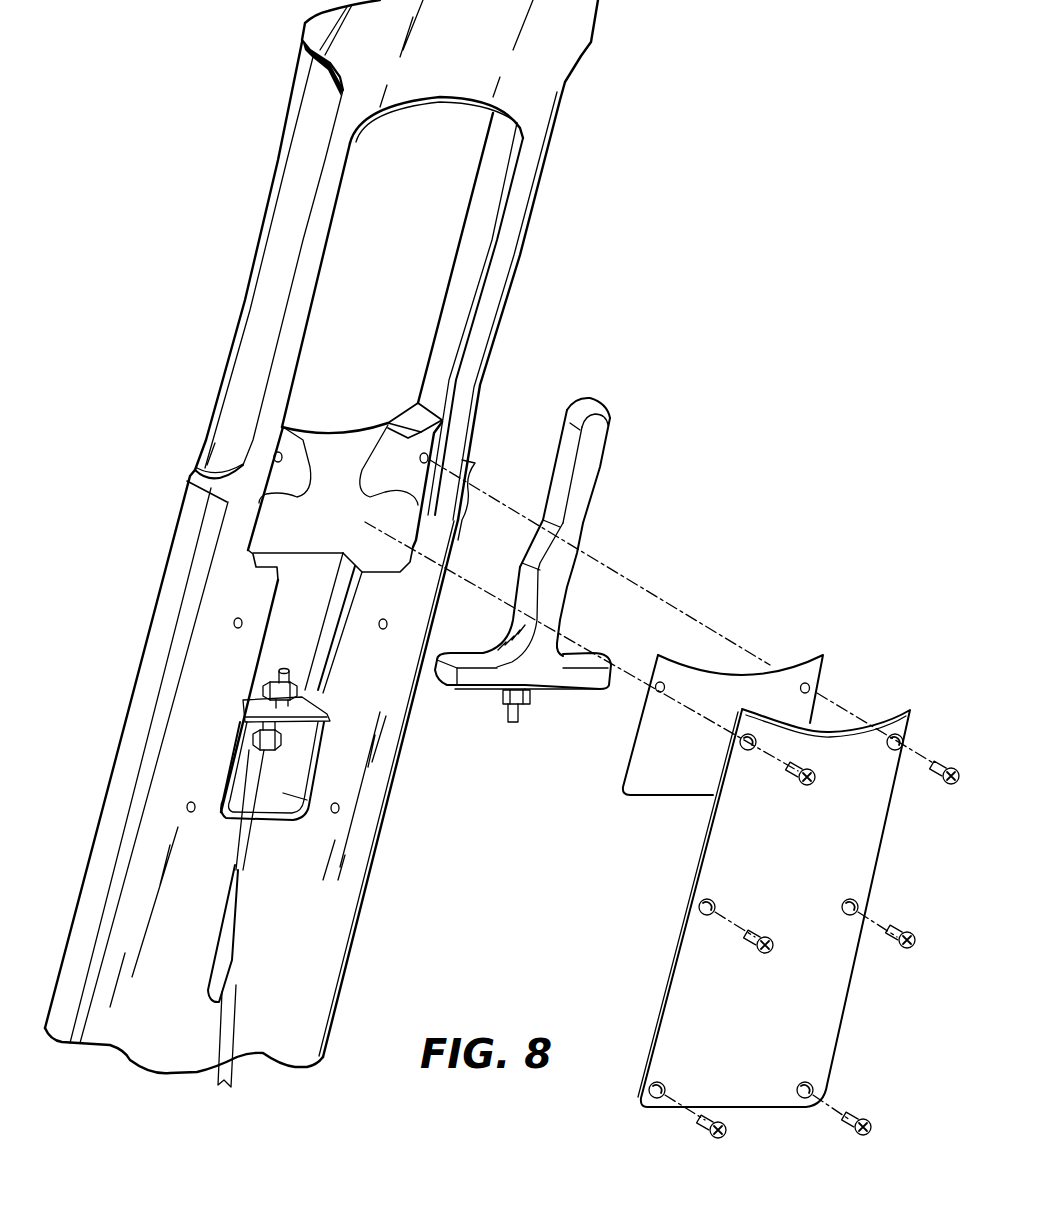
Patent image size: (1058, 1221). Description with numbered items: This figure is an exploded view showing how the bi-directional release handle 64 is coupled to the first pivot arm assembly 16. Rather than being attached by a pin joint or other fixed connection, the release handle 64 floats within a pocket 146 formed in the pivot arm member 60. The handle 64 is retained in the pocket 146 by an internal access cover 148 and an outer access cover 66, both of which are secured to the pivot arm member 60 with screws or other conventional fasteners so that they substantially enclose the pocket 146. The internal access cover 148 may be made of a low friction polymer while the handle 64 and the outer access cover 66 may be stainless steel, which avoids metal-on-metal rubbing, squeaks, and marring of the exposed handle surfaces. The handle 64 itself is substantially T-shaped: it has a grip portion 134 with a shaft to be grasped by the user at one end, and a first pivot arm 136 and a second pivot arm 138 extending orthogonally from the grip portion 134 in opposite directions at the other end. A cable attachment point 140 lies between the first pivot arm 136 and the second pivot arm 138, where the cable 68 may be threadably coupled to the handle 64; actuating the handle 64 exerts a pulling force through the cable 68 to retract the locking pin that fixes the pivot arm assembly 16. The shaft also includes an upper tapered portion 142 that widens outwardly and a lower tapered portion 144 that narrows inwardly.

The first pivot arm assembly 16 is at (236, 162).
The pivot arm member 60 is at (118, 743).
The release handle 64 is at (658, 423).
The external access plate 66 is at (843, 990).
The cable 68 is at (233, 978).
The grip portion 134 is at (568, 453).
The first pivot arm 136 is at (463, 690).
The second pivot arm 138 is at (597, 697).
The cable attachment point 140 is at (543, 695).
The upper tapered portion 142 is at (578, 553).
The lower tapered portion 144 is at (572, 603).
The pocket 146 is at (283, 528).
The internal access cover 148 is at (828, 670).